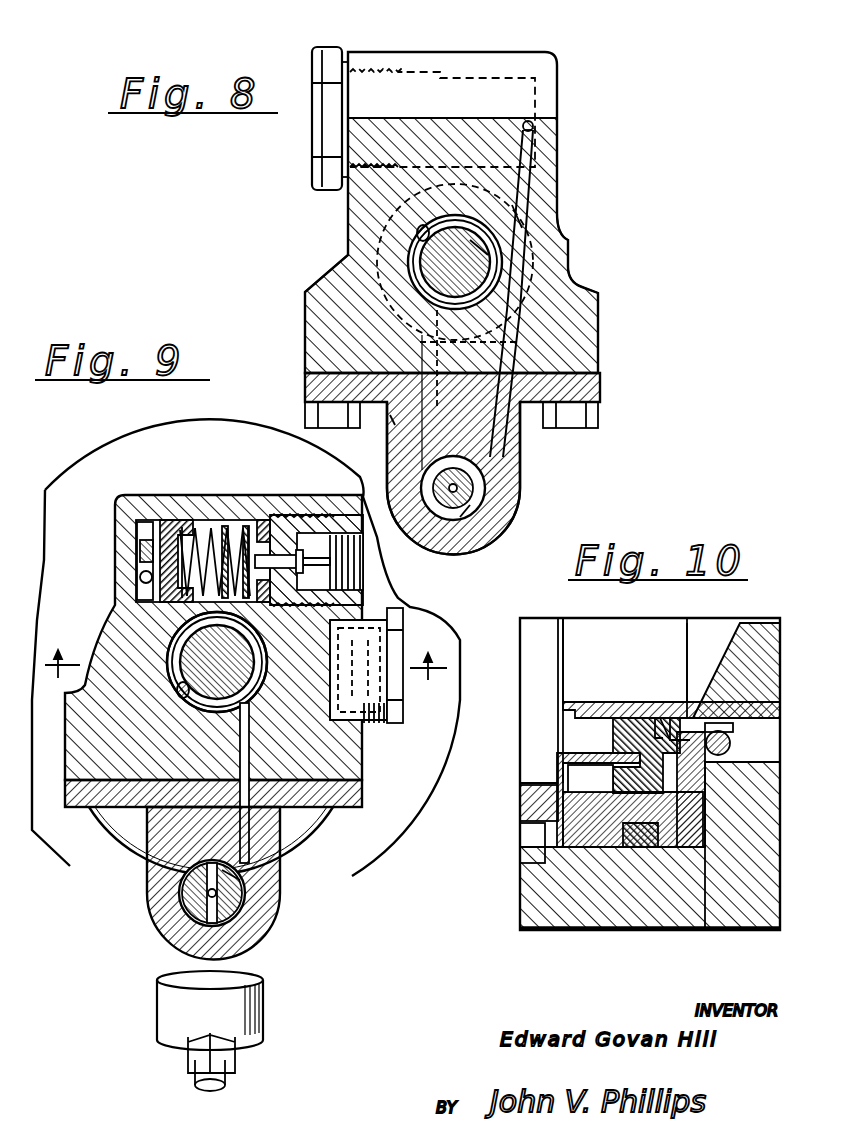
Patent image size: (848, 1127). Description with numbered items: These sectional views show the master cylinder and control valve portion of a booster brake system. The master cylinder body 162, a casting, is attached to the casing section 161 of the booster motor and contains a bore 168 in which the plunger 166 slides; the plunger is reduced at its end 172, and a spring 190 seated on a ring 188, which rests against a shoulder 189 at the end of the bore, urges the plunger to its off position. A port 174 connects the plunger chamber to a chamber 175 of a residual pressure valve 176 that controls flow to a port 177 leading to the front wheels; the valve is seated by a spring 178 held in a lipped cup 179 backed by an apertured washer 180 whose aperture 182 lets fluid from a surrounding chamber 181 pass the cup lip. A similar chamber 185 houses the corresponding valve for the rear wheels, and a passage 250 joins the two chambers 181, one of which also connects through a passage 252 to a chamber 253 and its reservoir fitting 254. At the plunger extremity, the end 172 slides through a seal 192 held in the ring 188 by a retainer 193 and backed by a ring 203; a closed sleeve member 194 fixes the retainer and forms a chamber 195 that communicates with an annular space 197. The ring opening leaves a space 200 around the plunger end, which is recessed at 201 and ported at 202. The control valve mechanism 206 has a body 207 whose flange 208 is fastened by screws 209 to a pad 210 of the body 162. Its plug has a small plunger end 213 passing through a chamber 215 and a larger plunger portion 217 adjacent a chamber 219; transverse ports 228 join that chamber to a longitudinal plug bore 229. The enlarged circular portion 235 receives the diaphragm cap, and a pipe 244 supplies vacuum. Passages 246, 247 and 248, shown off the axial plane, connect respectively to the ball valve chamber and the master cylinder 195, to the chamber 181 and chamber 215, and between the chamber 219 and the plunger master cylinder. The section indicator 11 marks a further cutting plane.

In FIG. 9, the section line 11 is at (246, 655).
In FIG. 9, the casing section 161 is at (418, 812).
In FIG. 8, the master cylinder body 162 is at (558, 142).
In FIG. 9, the master cylinder body 162 is at (318, 497).
In FIG. 10, the master cylinder body 162 is at (522, 900).
In FIG. 8, the plunger structure 166 is at (480, 248).
In FIG. 8, the bore 168 is at (417, 232).
In FIG. 8, the reduced plunger portion 172 is at (440, 262).
In FIG. 9, the reduced plunger portion 172 is at (190, 648).
In FIG. 10, the reduced plunger portion 172 is at (765, 610).
In FIG. 9, the port 174 is at (217, 662).
In FIG. 9, the chamber 175 is at (210, 520).
In FIG. 9, the residual pressure valve 176 is at (280, 515).
In FIG. 9, the port 177 is at (330, 567).
In FIG. 9, the spring 178 is at (235, 522).
In FIG. 9, the lipped cup 179 is at (172, 520).
In FIG. 9, the washer 180 is at (150, 547).
In FIG. 9, the chamber 181 is at (137, 527).
In FIG. 9, the aperture 182 is at (143, 518).
In FIG. 8, the chamber 185 is at (503, 72).
In FIG. 10, the ring 188 is at (733, 727).
In FIG. 10, the shoulder 189 is at (714, 928).
In FIG. 8, the spring 190 is at (413, 250).
In FIG. 9, the spring 190 is at (178, 690).
In FIG. 10, the spring 190 is at (731, 747).
In FIG. 10, the seal 192 is at (628, 718).
In FIG. 10, the retainer 193 is at (560, 758).
In FIG. 10, the sleeve member 194 is at (522, 806).
In FIG. 10, the chamber 195 is at (527, 722).
In FIG. 10, the annular space 197 is at (522, 845).
In FIG. 10, the space 200 is at (688, 700).
In FIG. 10, the recess 201 is at (567, 660).
In FIG. 10, the ports 202 is at (682, 720).
In FIG. 10, the ring 203 is at (672, 725).
In FIG. 8, the control valve mechanism 206 is at (522, 512).
In FIG. 9, the control valve mechanism 206 is at (158, 936).
In FIG. 8, the body 207 is at (485, 487).
In FIG. 9, the body 207 is at (262, 935).
In FIG. 8, the flange 208 is at (600, 388).
In FIG. 9, the flange 208 is at (362, 790).
In FIG. 8, the screws 209 is at (598, 418).
In FIG. 8, the pad 210 is at (600, 352).
In FIG. 9, the pad 210 is at (362, 757).
In FIG. 8, the plunger end 213 is at (475, 480).
In FIG. 8, the chamber 215 is at (462, 518).
In FIG. 9, the plunger portion 217 is at (185, 898).
In FIG. 9, the chamber 219 is at (250, 887).
In FIG. 9, the transverse ports 228 is at (216, 917).
In FIG. 8, the longitudinal plug bore 229 is at (458, 493).
In FIG. 9, the longitudinal plug bore 229 is at (208, 892).
In FIG. 9, the enlarged circular portion 235 is at (356, 900).
In FIG. 9, the pipe 244 is at (198, 1086).
In FIG. 8, the passage 246 is at (395, 420).
In FIG. 8, the passage 247 is at (518, 218).
In FIG. 9, the passage 248 is at (258, 846).
In FIG. 8, the passage 250 is at (540, 122).
In FIG. 9, the passage 252 is at (140, 577).
In FIG. 9, the chamber 253 is at (395, 618).
In FIG. 9, the fitting 254 is at (403, 700).